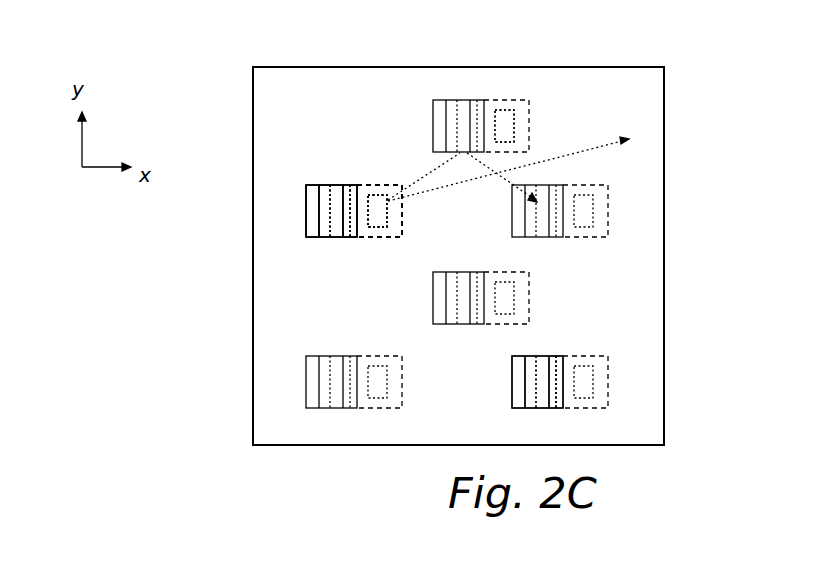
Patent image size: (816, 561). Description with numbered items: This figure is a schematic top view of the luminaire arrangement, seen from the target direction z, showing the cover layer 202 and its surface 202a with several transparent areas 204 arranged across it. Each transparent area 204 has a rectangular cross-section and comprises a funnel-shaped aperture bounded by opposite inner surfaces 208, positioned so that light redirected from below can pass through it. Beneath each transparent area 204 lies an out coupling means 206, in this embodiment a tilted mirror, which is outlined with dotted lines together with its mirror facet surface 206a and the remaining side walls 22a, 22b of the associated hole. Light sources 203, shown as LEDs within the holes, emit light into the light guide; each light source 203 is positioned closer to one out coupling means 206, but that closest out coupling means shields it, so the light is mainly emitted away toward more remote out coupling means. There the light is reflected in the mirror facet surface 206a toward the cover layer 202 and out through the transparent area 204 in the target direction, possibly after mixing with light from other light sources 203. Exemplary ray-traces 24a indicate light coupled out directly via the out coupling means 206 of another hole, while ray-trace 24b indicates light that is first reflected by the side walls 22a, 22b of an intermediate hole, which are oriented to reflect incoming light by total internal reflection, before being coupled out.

The cover layer 202 is at (277, 312).
The substrate surface 202a is at (458, 256).
The transparent area 204 is at (318, 174).
The out coupling means 206 is at (351, 186).
The mirror facet surface 206a is at (453, 296).
The side wall 22a is at (373, 186).
The side wall 22b is at (378, 237).
The light source 203 is at (383, 207).
The inner surface of aperture 208 is at (313, 233).
The ray-trace 24a is at (593, 148).
The ray-trace 24b is at (507, 183).